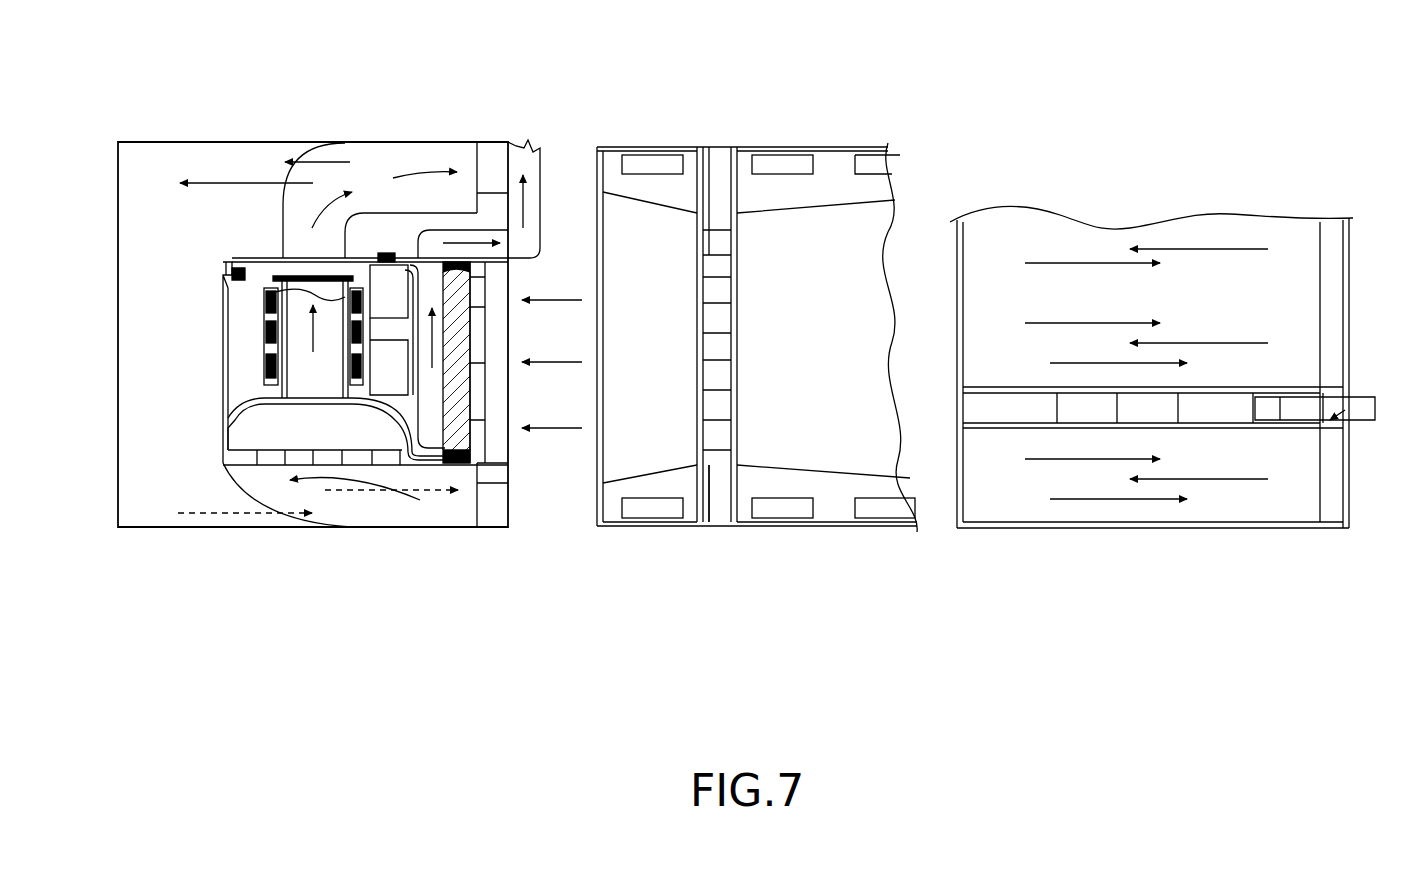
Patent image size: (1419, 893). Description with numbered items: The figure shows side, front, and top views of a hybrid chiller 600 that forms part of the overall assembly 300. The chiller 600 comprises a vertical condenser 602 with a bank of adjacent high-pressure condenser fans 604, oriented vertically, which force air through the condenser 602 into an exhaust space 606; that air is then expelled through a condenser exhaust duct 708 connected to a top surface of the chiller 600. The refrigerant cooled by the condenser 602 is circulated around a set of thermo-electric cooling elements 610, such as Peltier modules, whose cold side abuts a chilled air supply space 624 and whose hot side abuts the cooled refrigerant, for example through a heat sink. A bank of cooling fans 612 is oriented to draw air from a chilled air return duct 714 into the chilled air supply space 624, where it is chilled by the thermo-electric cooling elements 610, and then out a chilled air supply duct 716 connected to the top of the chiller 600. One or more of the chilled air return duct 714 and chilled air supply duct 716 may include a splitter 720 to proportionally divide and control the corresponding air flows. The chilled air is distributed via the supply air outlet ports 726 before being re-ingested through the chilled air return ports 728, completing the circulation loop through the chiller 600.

The power tool / vacuum system 300 is at (163, 48).
The hybrid chiller 600 is at (147, 177).
The vertical condenser 602 is at (457, 321).
The high-pressure condenser fans 604 is at (477, 293).
The exhaust space 606 is at (432, 385).
The thermo-electric cooling elements 610 is at (270, 300).
The cooling fans 612 is at (243, 457).
The chilled air supply space 624 is at (298, 303).
The condenser exhaust duct 708 is at (537, 163).
The chilled air return duct 714 is at (413, 512).
The chilled air supply duct 716 is at (444, 156).
The splitter 720 is at (723, 512).
The supply air outlet ports 726 is at (782, 162).
The chilled air return ports 728 is at (885, 512).